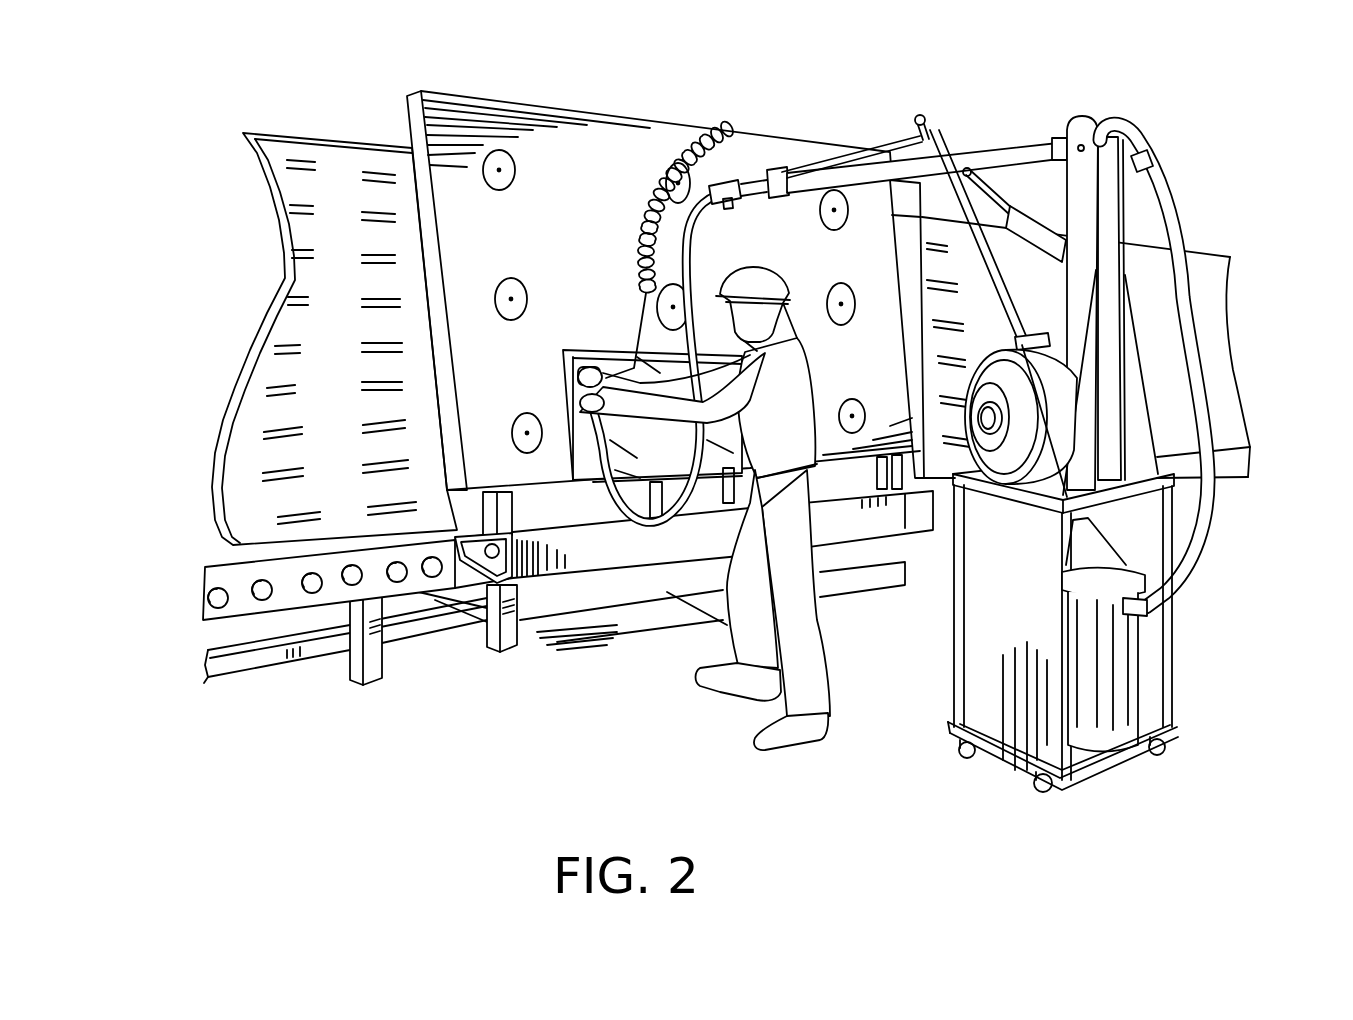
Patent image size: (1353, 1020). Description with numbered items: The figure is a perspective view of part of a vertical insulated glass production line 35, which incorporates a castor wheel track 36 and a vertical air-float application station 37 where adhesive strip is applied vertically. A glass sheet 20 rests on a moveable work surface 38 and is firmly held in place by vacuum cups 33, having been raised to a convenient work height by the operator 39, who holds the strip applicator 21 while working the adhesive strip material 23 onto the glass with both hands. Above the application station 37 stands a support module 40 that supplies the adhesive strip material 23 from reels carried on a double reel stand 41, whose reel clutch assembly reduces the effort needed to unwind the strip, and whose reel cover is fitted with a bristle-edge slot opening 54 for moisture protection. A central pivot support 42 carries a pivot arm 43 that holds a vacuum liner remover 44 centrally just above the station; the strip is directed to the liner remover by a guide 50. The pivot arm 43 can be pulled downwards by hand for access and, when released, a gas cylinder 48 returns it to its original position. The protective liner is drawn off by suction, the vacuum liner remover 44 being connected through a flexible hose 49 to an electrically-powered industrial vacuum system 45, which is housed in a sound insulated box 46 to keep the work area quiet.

The glass sheet 20 is at (660, 358).
The hand-held tool 21 is at (567, 383).
The adhesive strip material 23 is at (880, 140).
The vacuum cups 33 is at (855, 400).
The vertical insulated glass production line 35 is at (340, 165).
The castor wheel track 36 is at (395, 590).
The vertical air-float application station 37 is at (597, 553).
The moveable work surface 38 is at (613, 145).
The operator 39 is at (803, 630).
The support module 40 is at (982, 657).
The double reel stand 41 is at (990, 457).
The central pivot support 42 is at (1100, 225).
The pivot arm 43 is at (1045, 135).
The vacuum liner remover 44 is at (727, 183).
The industrial vacuum system 45 is at (1107, 658).
The sound insulated box 46 is at (1127, 730).
The gas cylinder 48 is at (990, 185).
The flexible hose 49 is at (1185, 318).
The guide 50 is at (925, 122).
The bristle-edge slot opening 54 is at (1125, 370).